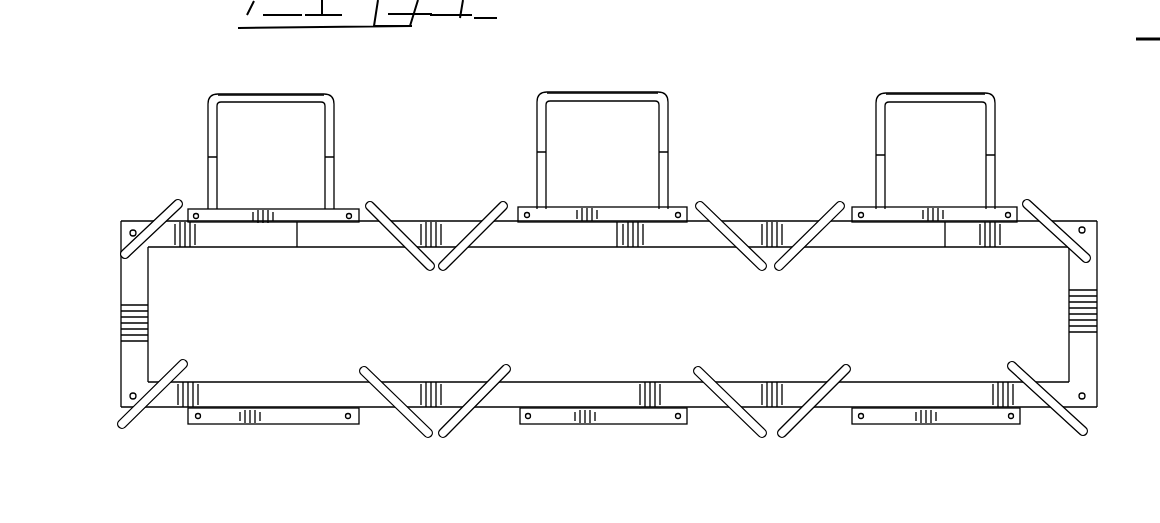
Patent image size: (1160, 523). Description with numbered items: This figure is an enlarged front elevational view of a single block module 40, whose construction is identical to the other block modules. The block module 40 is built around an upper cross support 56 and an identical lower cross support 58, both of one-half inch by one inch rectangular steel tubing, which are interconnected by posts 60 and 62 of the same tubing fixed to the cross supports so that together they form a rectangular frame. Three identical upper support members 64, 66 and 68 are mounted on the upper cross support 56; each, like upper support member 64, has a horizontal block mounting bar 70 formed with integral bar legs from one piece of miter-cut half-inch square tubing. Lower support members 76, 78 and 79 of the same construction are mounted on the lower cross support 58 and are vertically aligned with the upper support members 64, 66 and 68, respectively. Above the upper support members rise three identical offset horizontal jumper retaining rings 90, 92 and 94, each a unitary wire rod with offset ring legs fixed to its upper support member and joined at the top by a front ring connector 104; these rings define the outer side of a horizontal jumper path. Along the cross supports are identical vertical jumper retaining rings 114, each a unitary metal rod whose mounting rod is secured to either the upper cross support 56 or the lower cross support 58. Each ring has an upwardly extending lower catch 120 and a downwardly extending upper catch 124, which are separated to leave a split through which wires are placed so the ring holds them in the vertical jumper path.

The block module 40 is at (637, 308).
The upper cross support 56 is at (444, 214).
The lower cross support 58 is at (508, 400).
The post 60 is at (148, 292).
The post 62 is at (1097, 297).
The upper support member 64 is at (342, 206).
The upper support member 66 is at (676, 205).
The upper support member 68 is at (1003, 205).
The horizontal block mounting bar 70 is at (297, 222).
The lower support member 76 is at (288, 426).
The lower support member 78 is at (597, 426).
The lower support member 79 is at (917, 426).
The offset horizontal jumper retaining ring 90 is at (304, 92).
The offset horizontal jumper retaining ring 92 is at (636, 91).
The offset horizontal jumper retaining ring 94 is at (965, 91).
The front ring connector 104 is at (262, 93).
The vertical jumper retaining ring 114 is at (165, 210).
The lower catch 120 is at (786, 263).
The upper catch 124 is at (825, 240).